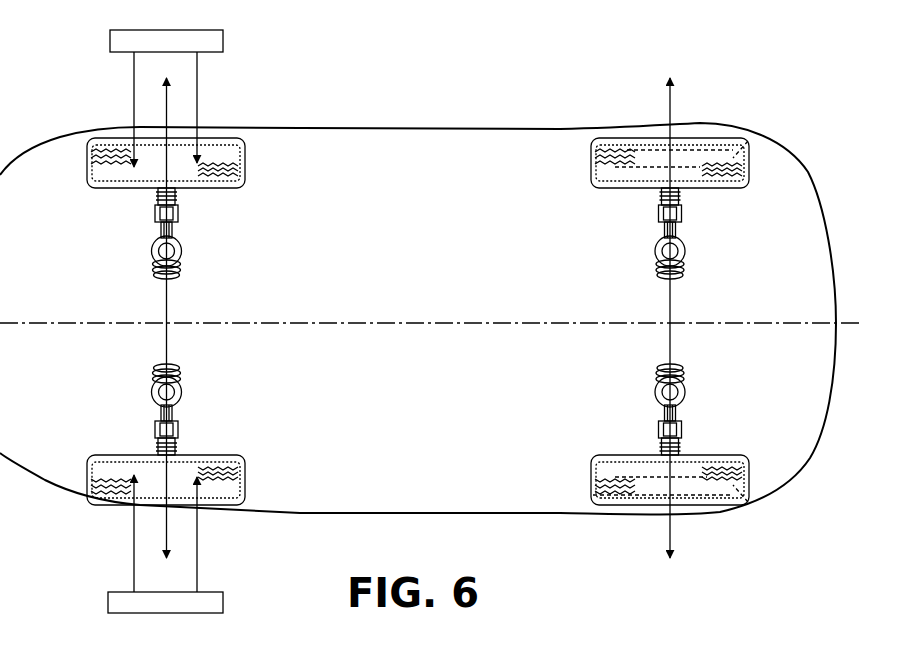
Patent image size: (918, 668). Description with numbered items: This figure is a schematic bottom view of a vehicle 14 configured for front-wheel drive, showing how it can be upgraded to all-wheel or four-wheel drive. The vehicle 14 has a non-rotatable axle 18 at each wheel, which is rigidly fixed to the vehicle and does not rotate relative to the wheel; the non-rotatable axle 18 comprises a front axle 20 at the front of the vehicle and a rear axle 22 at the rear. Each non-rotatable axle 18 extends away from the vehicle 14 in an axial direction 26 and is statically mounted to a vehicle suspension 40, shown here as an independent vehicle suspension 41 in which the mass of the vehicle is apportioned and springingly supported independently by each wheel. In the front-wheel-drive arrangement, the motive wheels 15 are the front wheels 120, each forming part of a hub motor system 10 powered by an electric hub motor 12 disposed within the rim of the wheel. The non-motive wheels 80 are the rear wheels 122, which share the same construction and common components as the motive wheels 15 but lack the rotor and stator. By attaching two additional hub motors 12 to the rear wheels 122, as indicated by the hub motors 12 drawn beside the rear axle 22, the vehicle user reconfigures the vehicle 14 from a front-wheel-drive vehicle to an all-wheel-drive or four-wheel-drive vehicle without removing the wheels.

The hub motor system 10 is at (702, 321).
The hub motor 12 is at (110, 38).
The vehicle 14 is at (489, 110).
The motive wheel 15 is at (711, 194).
The non-rotatable axle 18 is at (436, 321).
The front axle 20 is at (661, 236).
The rear axle 22 is at (158, 236).
The axial direction 26 is at (168, 100).
The vehicle suspension 40 is at (474, 321).
The independent vehicle suspension 41 is at (183, 268).
The non-motive wheel 80 is at (208, 194).
The front wheels 120 is at (704, 321).
The rear wheels 122 is at (207, 321).